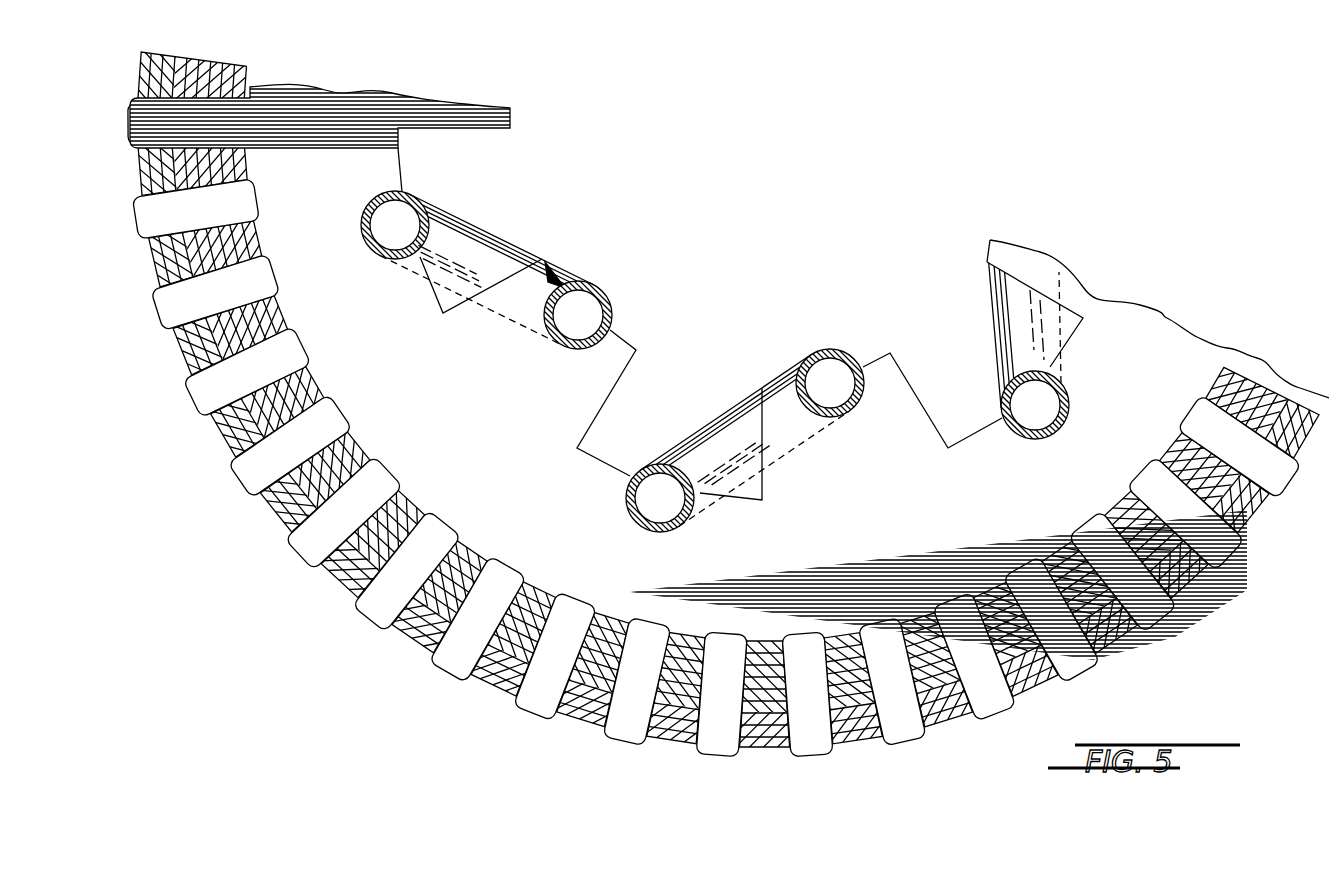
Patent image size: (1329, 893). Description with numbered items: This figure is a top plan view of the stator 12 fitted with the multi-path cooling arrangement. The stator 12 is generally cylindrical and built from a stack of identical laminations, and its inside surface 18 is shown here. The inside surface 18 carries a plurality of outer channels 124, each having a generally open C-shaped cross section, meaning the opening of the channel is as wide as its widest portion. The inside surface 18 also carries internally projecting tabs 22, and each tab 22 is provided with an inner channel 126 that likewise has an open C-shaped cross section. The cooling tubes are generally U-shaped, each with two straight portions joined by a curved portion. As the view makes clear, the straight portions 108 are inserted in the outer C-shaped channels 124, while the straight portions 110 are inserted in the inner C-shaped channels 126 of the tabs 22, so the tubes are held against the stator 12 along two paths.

The stator 12 is at (1182, 631).
The inside surface 18 is at (967, 430).
The internally projecting tabs 22 is at (530, 288).
The straight portion 108 is at (608, 290).
The straight portion 110 is at (822, 357).
The outer channels 124 is at (1002, 420).
The inner channel 126 is at (866, 380).